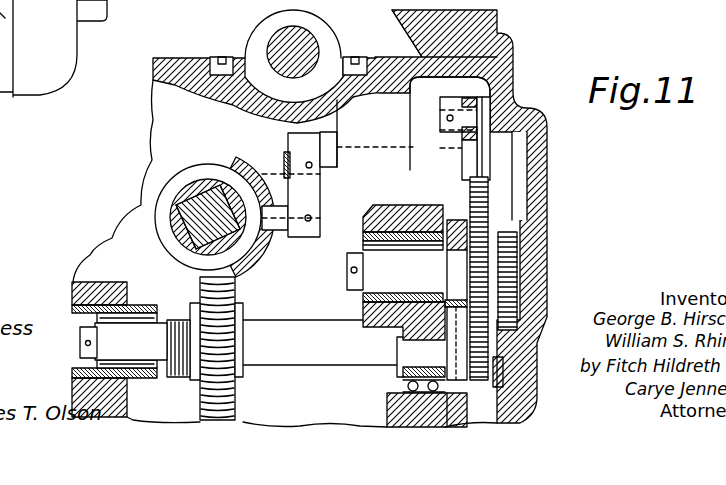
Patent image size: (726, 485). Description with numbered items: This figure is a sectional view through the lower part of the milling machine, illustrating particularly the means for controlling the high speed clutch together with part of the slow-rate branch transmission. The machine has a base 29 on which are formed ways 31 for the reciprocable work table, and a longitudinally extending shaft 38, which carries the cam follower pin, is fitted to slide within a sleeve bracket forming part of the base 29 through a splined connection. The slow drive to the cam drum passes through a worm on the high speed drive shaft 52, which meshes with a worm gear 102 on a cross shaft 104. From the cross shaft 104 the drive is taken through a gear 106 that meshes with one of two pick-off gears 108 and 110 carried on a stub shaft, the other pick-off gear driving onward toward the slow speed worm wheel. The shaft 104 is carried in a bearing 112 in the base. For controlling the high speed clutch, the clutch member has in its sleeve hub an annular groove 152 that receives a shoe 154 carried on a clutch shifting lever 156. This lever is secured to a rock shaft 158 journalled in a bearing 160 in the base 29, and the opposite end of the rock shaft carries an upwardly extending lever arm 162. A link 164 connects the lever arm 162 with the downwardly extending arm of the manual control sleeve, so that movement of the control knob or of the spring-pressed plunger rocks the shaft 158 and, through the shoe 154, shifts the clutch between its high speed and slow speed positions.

The base 29 is at (496, 38).
The ways 31 is at (405, 28).
The shaft 38 is at (278, 42).
The high speed drive shaft 52 is at (180, 238).
The worm gear 102 is at (230, 393).
The cross shaft 104 is at (345, 350).
The gear 106 is at (482, 368).
The pick-off gear 108 is at (486, 203).
The pick-off gear 110 is at (509, 268).
The bearing 112 is at (382, 270).
The annular groove 152 is at (178, 180).
The shoe 154 is at (240, 160).
The clutch shifting lever 156 is at (303, 233).
The rock shaft 158 is at (282, 160).
The bearing 160 is at (392, 106).
The lever arm 162 is at (481, 163).
The link 164 is at (468, 95).